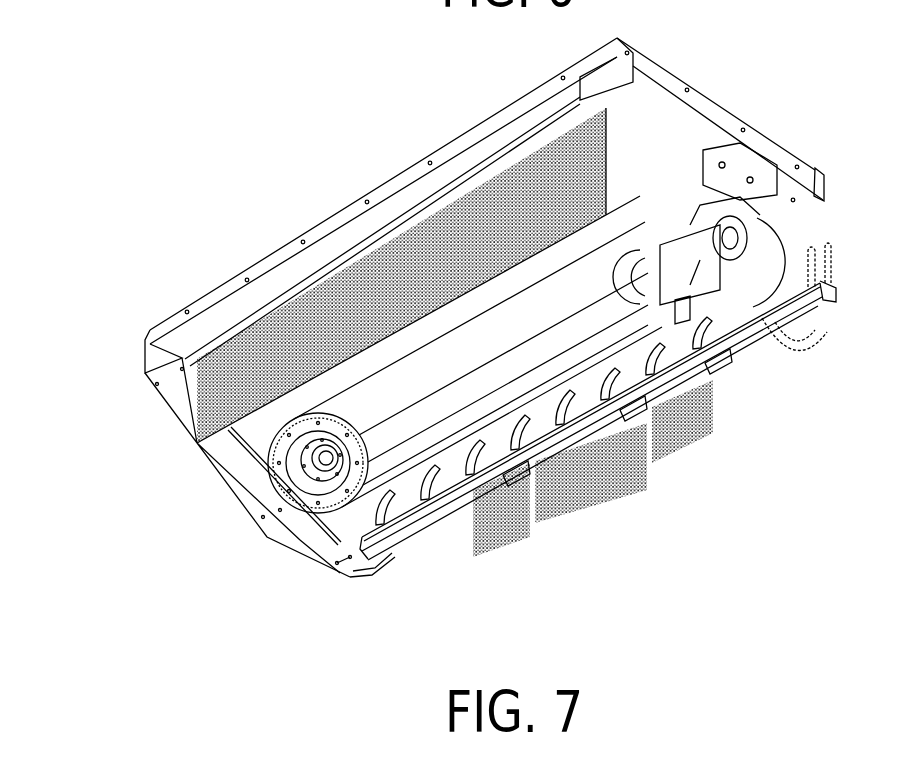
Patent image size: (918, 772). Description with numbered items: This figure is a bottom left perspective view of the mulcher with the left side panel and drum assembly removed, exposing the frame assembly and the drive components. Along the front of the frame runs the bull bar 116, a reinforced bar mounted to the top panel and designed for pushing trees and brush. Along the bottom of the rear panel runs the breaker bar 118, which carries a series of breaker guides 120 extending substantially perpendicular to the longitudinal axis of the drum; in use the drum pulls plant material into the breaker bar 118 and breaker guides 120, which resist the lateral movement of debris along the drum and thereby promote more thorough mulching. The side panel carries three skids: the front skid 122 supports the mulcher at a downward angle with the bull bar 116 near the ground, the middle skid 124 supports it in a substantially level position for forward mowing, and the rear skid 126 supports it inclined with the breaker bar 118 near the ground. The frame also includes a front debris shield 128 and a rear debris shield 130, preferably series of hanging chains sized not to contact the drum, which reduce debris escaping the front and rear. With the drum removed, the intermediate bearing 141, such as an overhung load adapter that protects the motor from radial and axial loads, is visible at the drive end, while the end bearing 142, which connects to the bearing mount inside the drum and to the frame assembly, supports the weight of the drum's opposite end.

The bull bar 116 is at (472, 150).
The breaker bar 118 is at (425, 520).
The breaker guides 120 is at (383, 527).
The front skid 122 is at (220, 473).
The middle skid 124 is at (303, 543).
The rear skid 126 is at (372, 573).
The front debris shield 128 is at (338, 297).
The rear debris shield 130 is at (610, 463).
The intermediate bearing 141 is at (708, 247).
The end bearing 142 is at (322, 456).